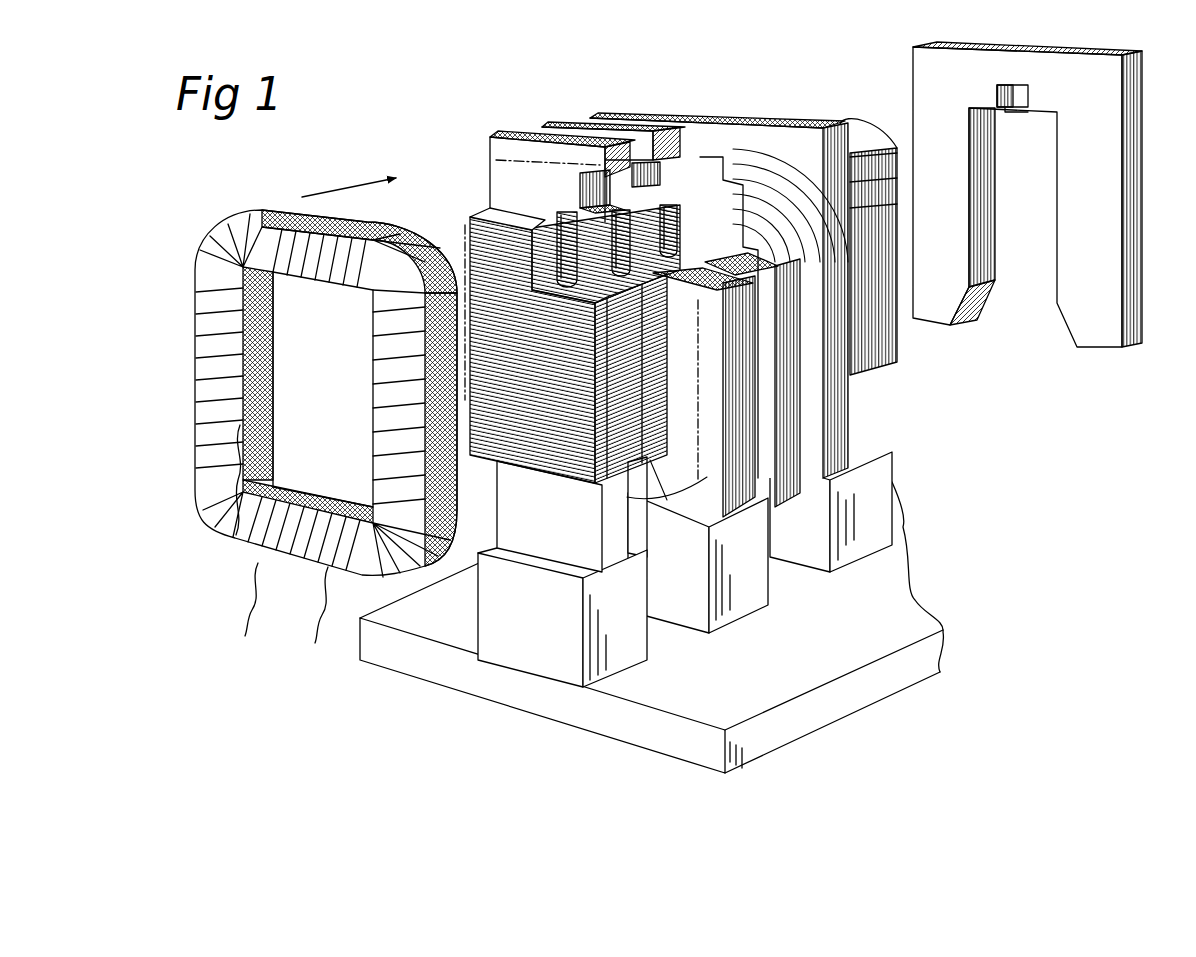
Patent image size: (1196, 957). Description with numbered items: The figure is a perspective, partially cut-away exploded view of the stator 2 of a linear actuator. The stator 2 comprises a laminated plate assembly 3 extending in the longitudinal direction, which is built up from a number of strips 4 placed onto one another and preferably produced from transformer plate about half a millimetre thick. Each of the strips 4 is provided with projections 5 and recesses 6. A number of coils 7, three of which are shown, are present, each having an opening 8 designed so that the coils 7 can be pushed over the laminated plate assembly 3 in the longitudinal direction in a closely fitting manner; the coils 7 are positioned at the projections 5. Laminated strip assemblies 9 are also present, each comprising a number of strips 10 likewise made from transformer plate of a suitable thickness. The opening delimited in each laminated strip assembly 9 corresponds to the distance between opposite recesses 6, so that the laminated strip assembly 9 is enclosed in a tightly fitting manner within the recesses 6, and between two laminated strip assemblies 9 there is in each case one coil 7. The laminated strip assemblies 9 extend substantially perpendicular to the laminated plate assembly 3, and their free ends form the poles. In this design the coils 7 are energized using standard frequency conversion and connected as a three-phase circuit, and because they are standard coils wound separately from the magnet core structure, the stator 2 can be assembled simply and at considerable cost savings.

The stator 2 is at (466, 108).
The laminated plate assembly 3 is at (500, 598).
The strips 4 is at (500, 447).
The projections 5 is at (569, 310).
The recesses 6 is at (612, 292).
The coils 7 is at (250, 233).
The openings 8 is at (492, 352).
The laminated strip assemblies 9 is at (598, 112).
The strips 10 is at (828, 455).